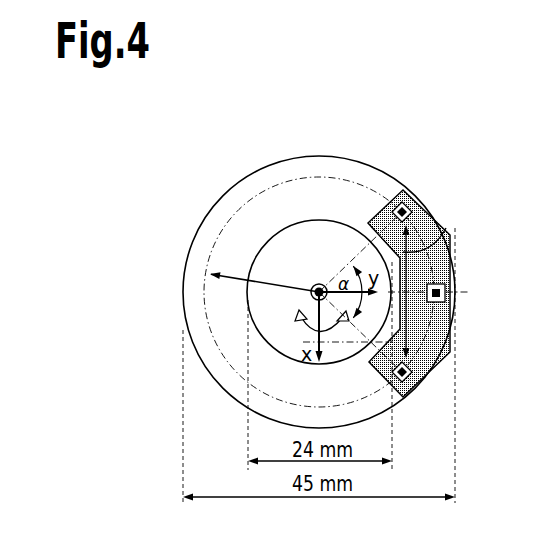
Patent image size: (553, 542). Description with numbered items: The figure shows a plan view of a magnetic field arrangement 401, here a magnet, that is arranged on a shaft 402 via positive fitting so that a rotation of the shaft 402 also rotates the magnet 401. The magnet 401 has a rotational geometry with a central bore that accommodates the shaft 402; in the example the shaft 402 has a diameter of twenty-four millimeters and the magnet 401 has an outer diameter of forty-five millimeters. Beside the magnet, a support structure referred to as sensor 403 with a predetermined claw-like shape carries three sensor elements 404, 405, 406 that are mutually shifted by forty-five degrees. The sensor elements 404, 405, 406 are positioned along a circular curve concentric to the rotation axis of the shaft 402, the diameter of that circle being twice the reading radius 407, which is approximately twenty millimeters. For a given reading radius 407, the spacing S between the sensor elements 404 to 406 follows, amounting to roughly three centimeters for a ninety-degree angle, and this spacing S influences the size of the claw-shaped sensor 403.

The magnetic field arrangement 401 is at (252, 174).
The shaft 402 is at (320, 221).
The sensor 403 is at (443, 330).
The sensor element 404 is at (413, 393).
The sensor element 405 is at (447, 292).
The sensor element 406 is at (412, 190).
The reading radius 407 is at (246, 280).
The spacing S is at (445, 227).